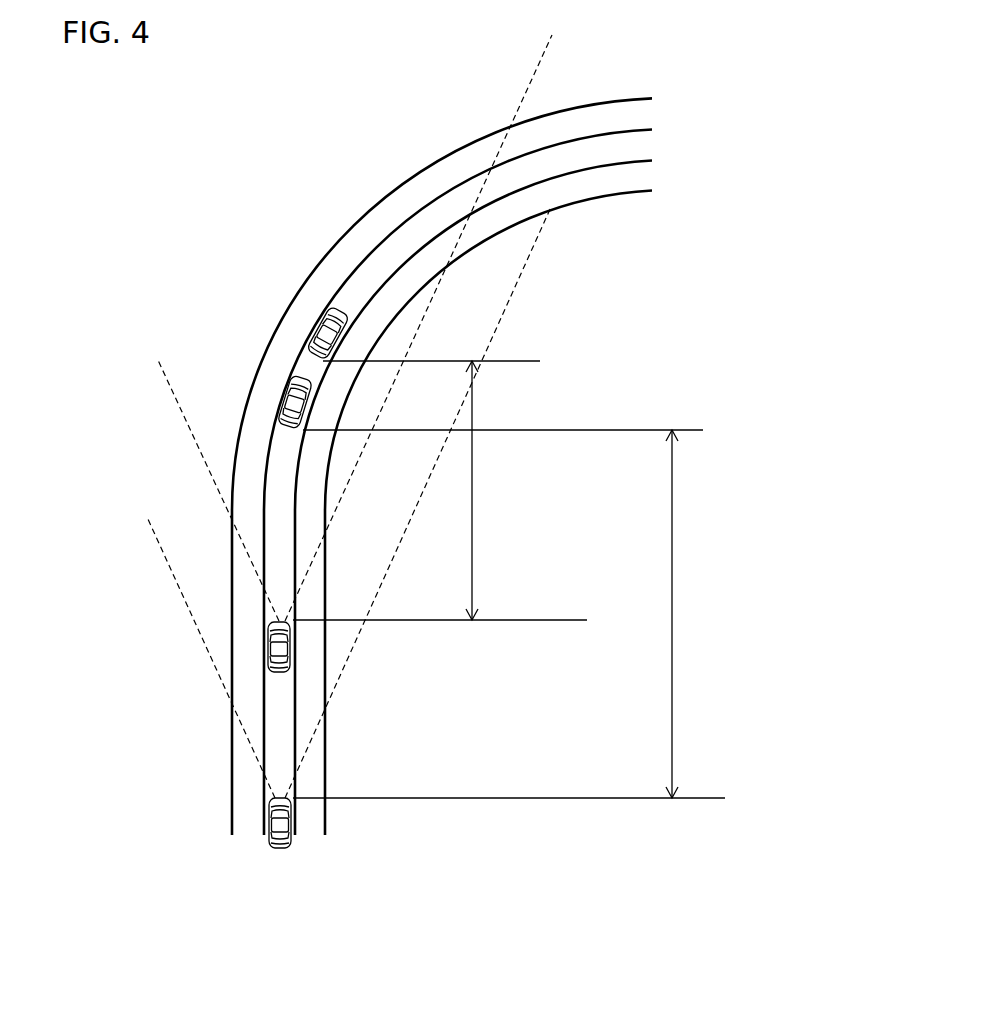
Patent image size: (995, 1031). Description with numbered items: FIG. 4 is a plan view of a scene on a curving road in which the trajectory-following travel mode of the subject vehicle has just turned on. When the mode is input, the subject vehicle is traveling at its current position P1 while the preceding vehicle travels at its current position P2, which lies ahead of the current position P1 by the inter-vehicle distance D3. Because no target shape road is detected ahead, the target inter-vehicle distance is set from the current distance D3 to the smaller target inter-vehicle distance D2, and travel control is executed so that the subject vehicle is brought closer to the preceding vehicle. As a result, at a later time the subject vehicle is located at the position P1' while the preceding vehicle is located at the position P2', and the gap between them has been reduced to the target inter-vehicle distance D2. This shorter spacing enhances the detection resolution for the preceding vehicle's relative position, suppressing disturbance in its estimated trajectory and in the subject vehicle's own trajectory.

The current position of the subject vehicle P1 is at (159, 849).
The position of the subject vehicle at time t1 P1' is at (154, 648).
The current position of the preceding vehicle P2 is at (170, 359).
The position of the preceding vehicle at time t1 P2' is at (189, 267).
The second inter-vehicle distance D2 is at (473, 490).
The third inter-vehicle distance D3 is at (548, 614).